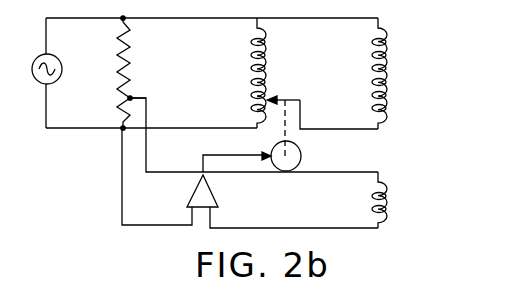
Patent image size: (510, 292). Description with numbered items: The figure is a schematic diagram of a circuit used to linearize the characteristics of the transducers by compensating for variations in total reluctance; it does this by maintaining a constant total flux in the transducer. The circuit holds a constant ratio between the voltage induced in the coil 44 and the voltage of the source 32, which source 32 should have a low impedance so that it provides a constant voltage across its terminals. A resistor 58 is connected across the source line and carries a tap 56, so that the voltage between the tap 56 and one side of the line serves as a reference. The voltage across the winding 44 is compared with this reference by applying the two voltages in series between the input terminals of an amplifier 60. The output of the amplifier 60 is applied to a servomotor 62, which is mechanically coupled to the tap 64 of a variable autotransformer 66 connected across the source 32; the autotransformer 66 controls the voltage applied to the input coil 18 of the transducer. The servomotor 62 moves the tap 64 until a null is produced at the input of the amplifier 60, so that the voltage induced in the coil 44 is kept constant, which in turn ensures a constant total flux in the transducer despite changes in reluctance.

The input coil 18 is at (389, 62).
The source 32 is at (55, 80).
The coil 44 is at (391, 186).
The tap 56 is at (134, 96).
The resistor 58 is at (131, 49).
The amplifier 60 is at (211, 191).
The servomotor 62 is at (301, 159).
The tap 64 is at (275, 97).
The variable autotransformer 66 is at (266, 50).